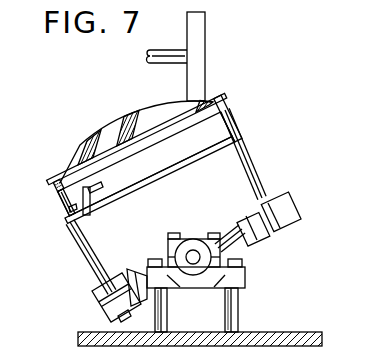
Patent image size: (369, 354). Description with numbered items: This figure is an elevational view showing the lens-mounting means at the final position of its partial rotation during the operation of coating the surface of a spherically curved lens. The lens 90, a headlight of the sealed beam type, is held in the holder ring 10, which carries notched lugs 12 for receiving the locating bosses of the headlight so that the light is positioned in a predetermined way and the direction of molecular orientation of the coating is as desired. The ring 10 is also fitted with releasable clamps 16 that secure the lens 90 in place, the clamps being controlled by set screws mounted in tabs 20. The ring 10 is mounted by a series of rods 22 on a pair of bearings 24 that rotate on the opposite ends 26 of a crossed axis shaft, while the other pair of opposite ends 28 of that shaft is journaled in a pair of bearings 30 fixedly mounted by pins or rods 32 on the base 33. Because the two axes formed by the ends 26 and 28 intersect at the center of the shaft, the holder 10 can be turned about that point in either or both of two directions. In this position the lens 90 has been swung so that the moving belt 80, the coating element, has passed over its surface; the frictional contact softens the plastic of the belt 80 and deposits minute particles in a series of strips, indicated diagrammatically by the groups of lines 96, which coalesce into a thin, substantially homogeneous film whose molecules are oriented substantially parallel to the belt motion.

The holder ring 10 is at (143, 181).
The lugs 12 is at (95, 197).
The releasable clamps 16 is at (60, 186).
The tabs 20 is at (58, 201).
The rods 22 is at (89, 255).
The bearings 24 is at (112, 312).
The opposite ends of crossed axis shaft 26 is at (231, 230).
The other pair of opposite ends of crossed axis shaft 28 is at (194, 254).
The bearings 30 is at (155, 267).
The pins or rods 32 is at (232, 320).
The base 33 is at (315, 340).
The belt 80 is at (199, 61).
The lens 90 is at (152, 112).
The groups of lines 96 is at (124, 132).